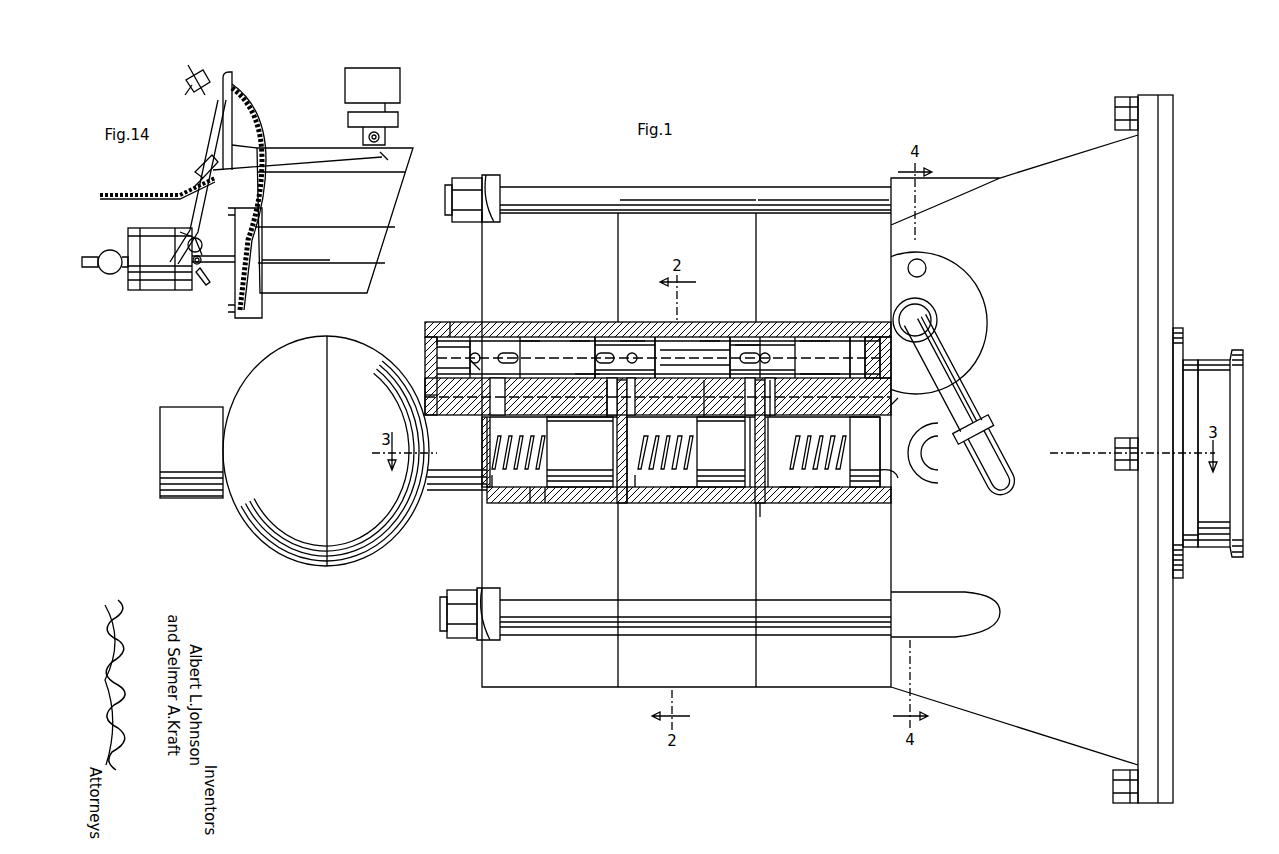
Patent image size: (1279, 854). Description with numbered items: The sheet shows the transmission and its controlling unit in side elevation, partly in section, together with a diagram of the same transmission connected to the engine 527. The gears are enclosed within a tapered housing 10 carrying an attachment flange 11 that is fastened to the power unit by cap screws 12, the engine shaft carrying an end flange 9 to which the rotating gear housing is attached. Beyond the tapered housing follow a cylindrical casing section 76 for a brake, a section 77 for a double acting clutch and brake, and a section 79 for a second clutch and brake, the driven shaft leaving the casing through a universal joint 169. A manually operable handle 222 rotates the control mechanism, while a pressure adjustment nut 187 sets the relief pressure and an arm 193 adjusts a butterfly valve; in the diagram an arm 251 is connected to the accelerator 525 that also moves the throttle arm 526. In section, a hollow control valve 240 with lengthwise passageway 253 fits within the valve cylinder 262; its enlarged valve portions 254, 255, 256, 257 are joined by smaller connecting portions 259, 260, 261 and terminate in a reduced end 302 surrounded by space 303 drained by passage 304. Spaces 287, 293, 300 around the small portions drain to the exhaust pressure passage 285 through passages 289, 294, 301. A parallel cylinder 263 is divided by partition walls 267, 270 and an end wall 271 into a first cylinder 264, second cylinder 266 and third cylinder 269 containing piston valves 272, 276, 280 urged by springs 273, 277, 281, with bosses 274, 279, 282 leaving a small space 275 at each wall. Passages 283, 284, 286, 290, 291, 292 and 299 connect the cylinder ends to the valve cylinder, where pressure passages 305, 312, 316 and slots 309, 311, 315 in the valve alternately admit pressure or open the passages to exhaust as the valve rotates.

In FIG. 1, the end flange 9 is at (1213, 360).
In FIG. 1, the tapered housing 10 is at (1073, 168).
In FIG. 14, the tapered housing 10 is at (218, 290).
In FIG. 1, the attachment flange 11 is at (1152, 100).
In FIG. 1, the cap screws 12 is at (1118, 115).
In FIG. 1, the casing section 76 is at (840, 213).
In FIG. 1, the casing section 77 is at (688, 210).
In FIG. 1, the casing section 79 is at (545, 207).
In FIG. 1, the universal joint 169 is at (272, 362).
In FIG. 14, the universal joint 169 is at (108, 252).
In FIG. 1, the pressure adjustment nut 187 is at (945, 483).
In FIG. 14, the pressure adjustment nut 187 is at (193, 259).
In FIG. 14, the arm 193 is at (200, 286).
In FIG. 1, the manually operable handle 222 is at (995, 450).
In FIG. 14, the manually operable handle 222 is at (180, 232).
In FIG. 1, the control valve 240 is at (684, 333).
In FIG. 14, the arm 251 is at (230, 270).
In FIG. 1, the passageway 253 is at (652, 326).
In FIG. 1, the valve portion 254 is at (873, 326).
In FIG. 1, the valve portion 255 is at (812, 322).
In FIG. 1, the valve portion 256 is at (597, 322).
In FIG. 1, the valve portion 257 is at (452, 322).
In FIG. 1, the connecting portion 259 is at (828, 326).
In FIG. 1, the connecting portion 260 is at (739, 322).
In FIG. 1, the connecting portion 261 is at (537, 322).
In FIG. 1, the valve cylinder 262 is at (742, 322).
In FIG. 1, the cylinder 263 is at (792, 499).
In FIG. 1, the first cylinder 264 is at (874, 504).
In FIG. 1, the second cylinder 266 is at (690, 502).
In FIG. 1, the partition wall 267 is at (762, 504).
In FIG. 1, the third cylinder 269 is at (555, 500).
In FIG. 1, the partition wall 270 is at (622, 500).
In FIG. 1, the end wall 271 is at (482, 470).
In FIG. 1, the piston valve 272 is at (823, 499).
In FIG. 1, the spring 273 is at (892, 480).
In FIG. 1, the boss 274 is at (770, 455).
In FIG. 1, the space 275 is at (752, 428).
In FIG. 1, the piston valve 276 is at (737, 490).
In FIG. 1, the spring 277 is at (660, 462).
In FIG. 1, the boss 279 is at (752, 452).
In FIG. 1, the piston valve 280 is at (537, 497).
In FIG. 1, the spring 281 is at (535, 458).
In FIG. 1, the boss 282 is at (613, 450).
In FIG. 1, the passage 283 is at (773, 402).
In FIG. 1, the passage 284 is at (896, 402).
In FIG. 1, the exhaust pressure passage 285 is at (540, 419).
In FIG. 1, the passage 286 is at (768, 432).
In FIG. 1, the space 287 is at (700, 326).
In FIG. 1, the passage 289 is at (704, 400).
In FIG. 1, the passage 290 is at (640, 419).
In FIG. 1, the passage 291 is at (608, 415).
In FIG. 1, the passage 292 is at (487, 430).
In FIG. 1, the space 293 is at (578, 322).
In FIG. 1, the passage 294 is at (583, 322).
In FIG. 1, the passage 299 is at (480, 324).
In FIG. 1, the space 300 is at (852, 322).
In FIG. 1, the exhaust passage 301 is at (896, 360).
In FIG. 1, the reduced end 302 is at (425, 330).
In FIG. 1, the space 303 is at (441, 322).
In FIG. 1, the passage 304 is at (422, 396).
In FIG. 1, the pressure passages 305 is at (477, 368).
In FIG. 1, the slots 309 is at (494, 349).
In FIG. 1, the slots 311 is at (623, 349).
In FIG. 1, the passages 312 is at (630, 325).
In FIG. 1, the slots 315 is at (770, 322).
In FIG. 1, the passages 316 is at (778, 337).
In FIG. 14, the accelerator 525 is at (195, 175).
In FIG. 14, the throttle arm 526 is at (388, 152).
In FIG. 14, the engine 527 is at (322, 219).